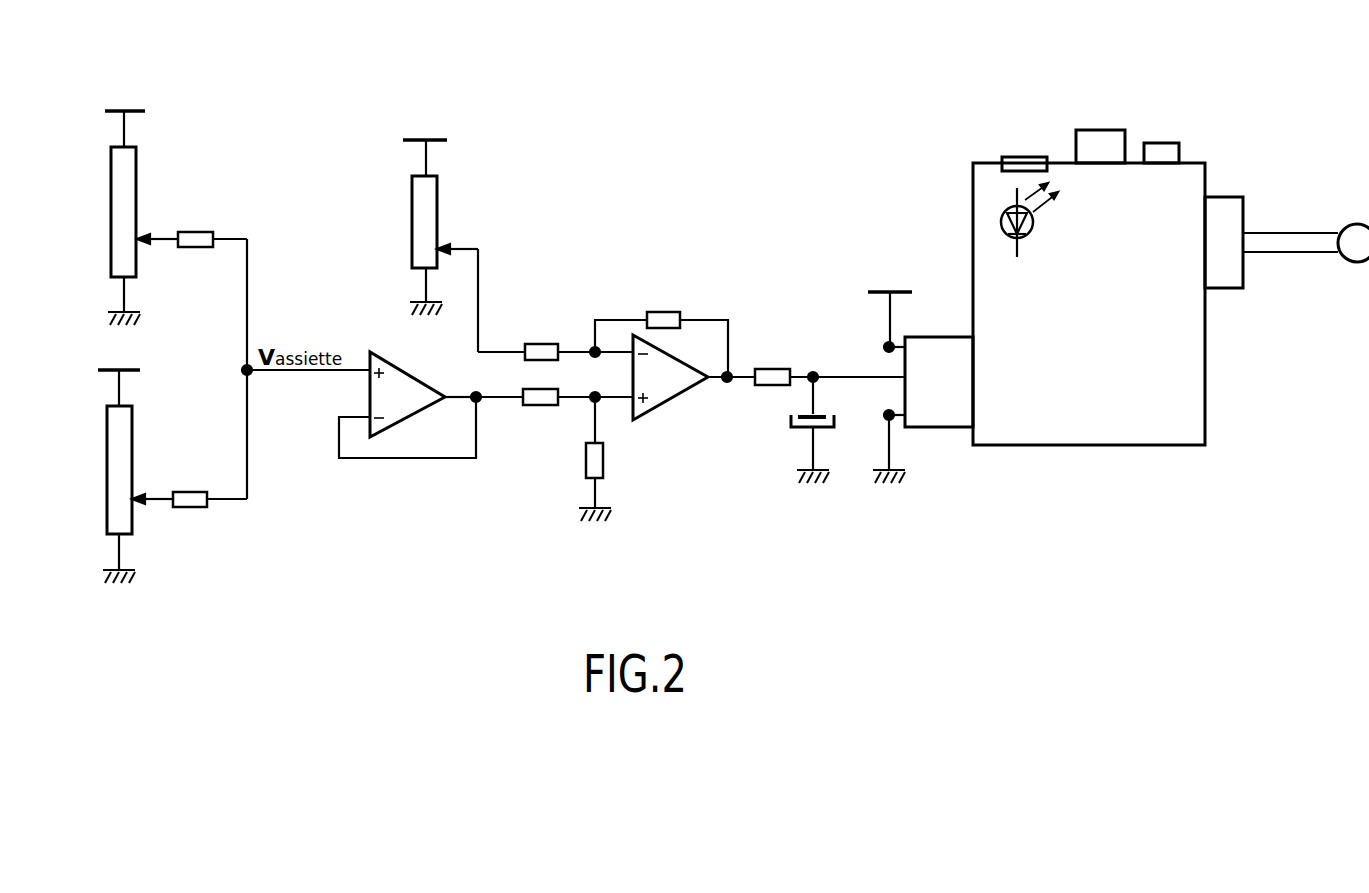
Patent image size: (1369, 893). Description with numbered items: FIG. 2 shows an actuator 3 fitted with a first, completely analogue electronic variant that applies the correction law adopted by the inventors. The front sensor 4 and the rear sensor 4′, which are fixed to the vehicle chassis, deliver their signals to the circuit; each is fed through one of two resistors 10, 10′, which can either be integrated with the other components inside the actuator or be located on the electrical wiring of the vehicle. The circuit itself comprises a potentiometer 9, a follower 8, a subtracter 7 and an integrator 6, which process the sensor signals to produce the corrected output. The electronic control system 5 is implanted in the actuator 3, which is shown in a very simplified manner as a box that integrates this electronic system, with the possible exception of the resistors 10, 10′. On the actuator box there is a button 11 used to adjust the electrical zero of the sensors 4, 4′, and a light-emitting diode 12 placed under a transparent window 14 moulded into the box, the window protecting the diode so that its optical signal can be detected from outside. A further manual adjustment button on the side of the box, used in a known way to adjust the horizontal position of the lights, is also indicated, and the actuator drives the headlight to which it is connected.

The actuator 3 is at (1102, 406).
The front sensor 4 is at (117, 195).
The rear sensor 4′ is at (112, 473).
The electronic control system 5 is at (1102, 358).
The integrator 6 is at (770, 460).
The subtracter 7 is at (677, 422).
The follower 8 is at (417, 478).
The potentiometer 9 is at (418, 210).
The resistor 10 is at (199, 237).
The resistor 10′ is at (193, 496).
The adjustment button 11 is at (1095, 136).
The light-emitting diode 12 is at (1032, 224).
The transparent window 14 is at (1020, 158).